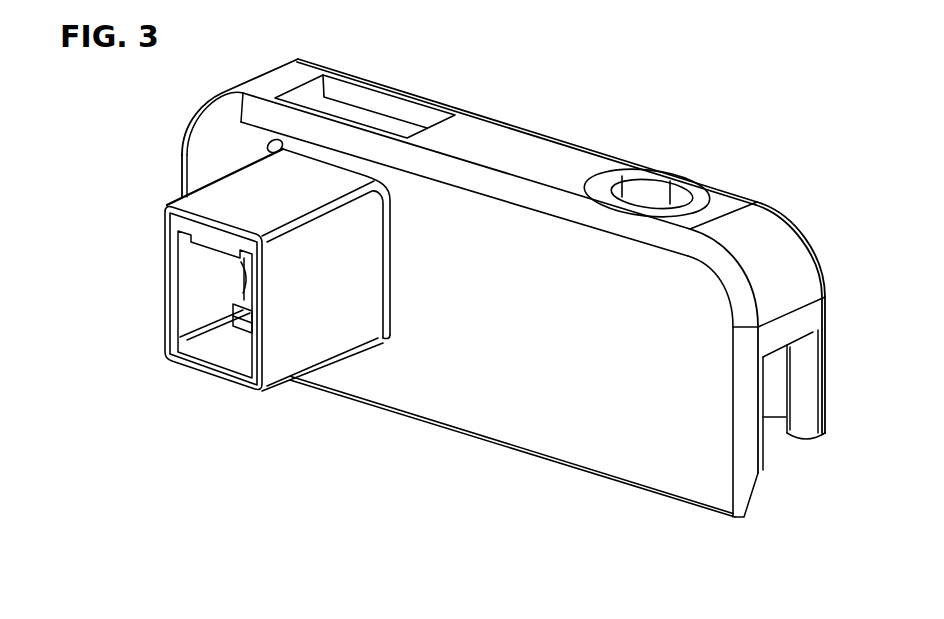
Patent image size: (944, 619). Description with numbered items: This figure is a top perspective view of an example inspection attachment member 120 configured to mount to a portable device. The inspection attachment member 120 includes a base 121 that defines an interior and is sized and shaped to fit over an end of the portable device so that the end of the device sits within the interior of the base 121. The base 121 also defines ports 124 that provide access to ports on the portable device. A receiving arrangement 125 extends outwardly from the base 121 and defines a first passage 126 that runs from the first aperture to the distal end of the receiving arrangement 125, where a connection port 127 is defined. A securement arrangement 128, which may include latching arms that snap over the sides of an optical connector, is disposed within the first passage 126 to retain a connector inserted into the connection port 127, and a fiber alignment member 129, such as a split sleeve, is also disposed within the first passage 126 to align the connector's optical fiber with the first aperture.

The inspection attachment member 120 is at (543, 117).
The base 121 is at (547, 425).
The ports 124 is at (360, 103).
The receiving arrangement 125 is at (298, 352).
The first passage 126 is at (190, 258).
The connection port 127 is at (163, 351).
The securement arrangement 128 is at (240, 323).
The fiber alignment member 129 is at (247, 280).